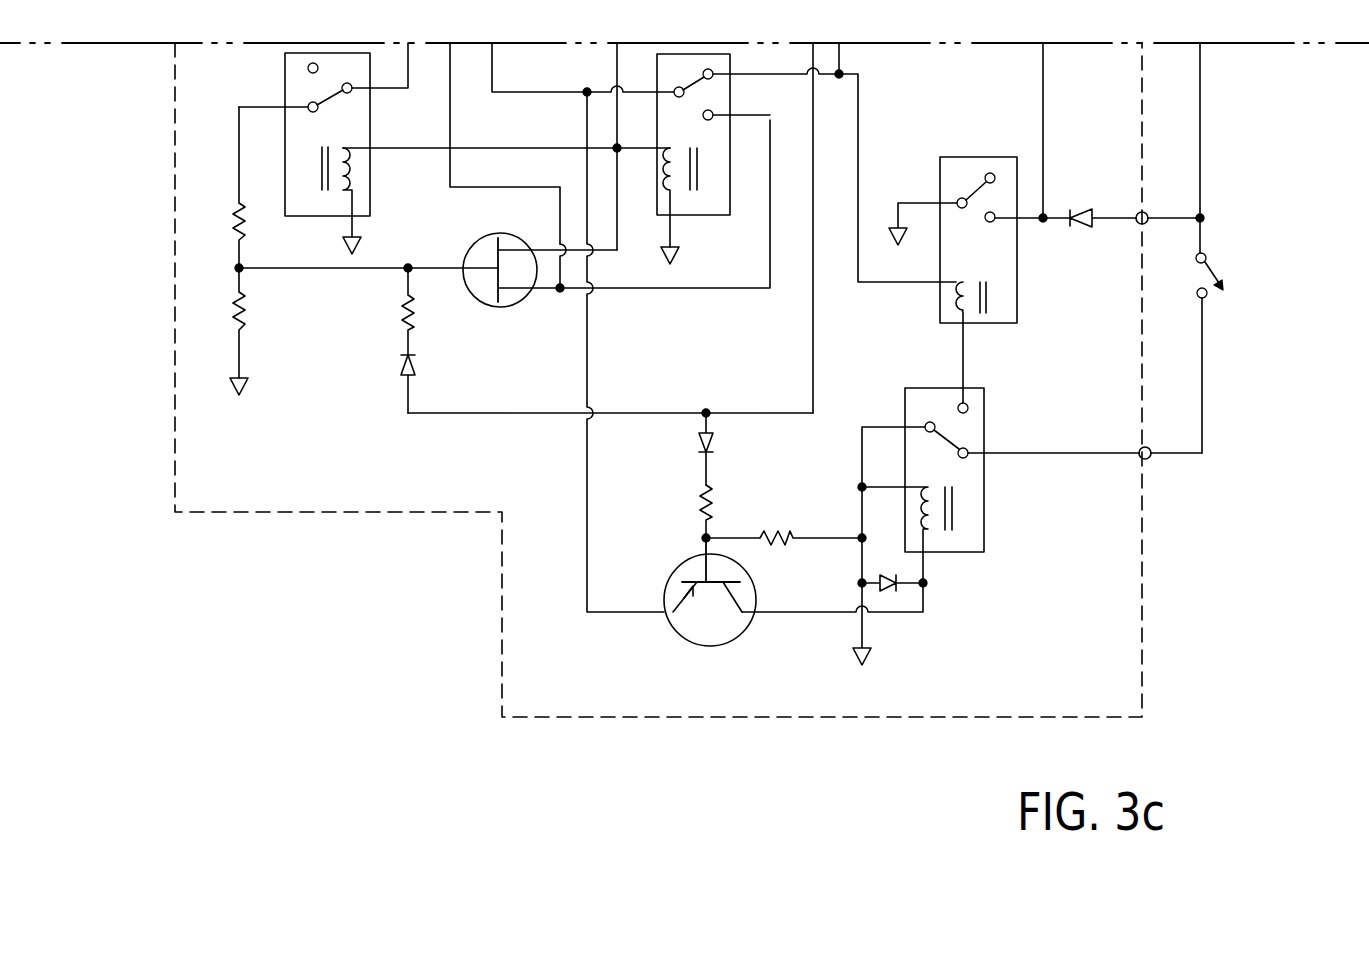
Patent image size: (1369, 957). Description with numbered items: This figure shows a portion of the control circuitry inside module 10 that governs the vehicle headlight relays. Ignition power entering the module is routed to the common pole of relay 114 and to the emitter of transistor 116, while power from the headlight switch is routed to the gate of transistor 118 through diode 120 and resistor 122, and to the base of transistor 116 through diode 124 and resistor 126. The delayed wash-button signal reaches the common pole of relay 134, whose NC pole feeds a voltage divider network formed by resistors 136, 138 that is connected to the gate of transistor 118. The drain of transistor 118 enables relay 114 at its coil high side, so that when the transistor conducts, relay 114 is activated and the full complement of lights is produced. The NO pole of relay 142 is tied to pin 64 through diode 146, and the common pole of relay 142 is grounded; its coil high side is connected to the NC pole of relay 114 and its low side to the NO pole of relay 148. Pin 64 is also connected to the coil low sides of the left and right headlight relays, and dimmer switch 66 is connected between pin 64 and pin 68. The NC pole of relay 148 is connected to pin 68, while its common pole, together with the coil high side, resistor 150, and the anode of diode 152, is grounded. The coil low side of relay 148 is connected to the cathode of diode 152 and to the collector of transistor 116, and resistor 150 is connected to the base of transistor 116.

The module 10 is at (175, 428).
The relay 134 is at (285, 60).
The resistor 136 is at (238, 215).
The resistor 138 is at (238, 305).
The resistor 122 is at (405, 308).
The diode 120 is at (405, 372).
The transistor 118 is at (503, 307).
The relay 114 is at (732, 63).
The diode 124 is at (699, 442).
The resistor 126 is at (699, 503).
The resistor 150 is at (771, 530).
The transistor 116 is at (707, 628).
The relay 142 is at (950, 157).
The diode 146 is at (1085, 207).
The pin 64 is at (1147, 212).
The dimmer switch 66 is at (1213, 258).
The pin 68 is at (1151, 462).
The relay 148 is at (986, 405).
The diode 152 is at (893, 592).